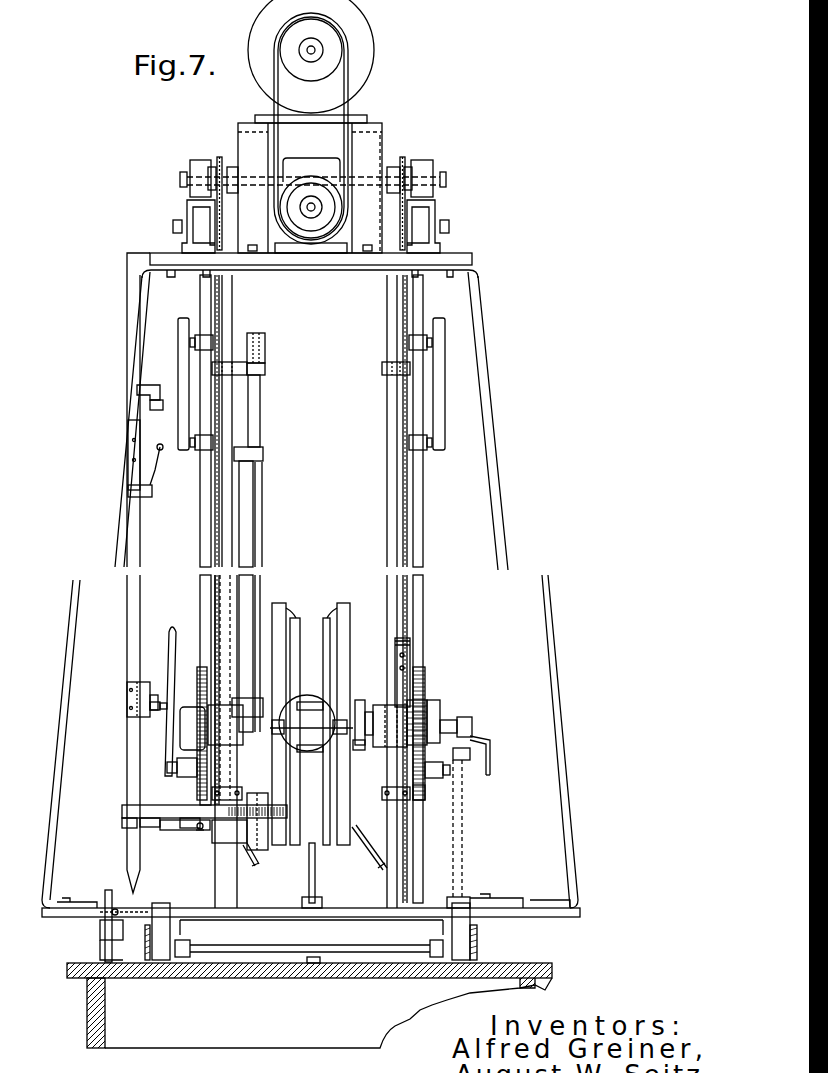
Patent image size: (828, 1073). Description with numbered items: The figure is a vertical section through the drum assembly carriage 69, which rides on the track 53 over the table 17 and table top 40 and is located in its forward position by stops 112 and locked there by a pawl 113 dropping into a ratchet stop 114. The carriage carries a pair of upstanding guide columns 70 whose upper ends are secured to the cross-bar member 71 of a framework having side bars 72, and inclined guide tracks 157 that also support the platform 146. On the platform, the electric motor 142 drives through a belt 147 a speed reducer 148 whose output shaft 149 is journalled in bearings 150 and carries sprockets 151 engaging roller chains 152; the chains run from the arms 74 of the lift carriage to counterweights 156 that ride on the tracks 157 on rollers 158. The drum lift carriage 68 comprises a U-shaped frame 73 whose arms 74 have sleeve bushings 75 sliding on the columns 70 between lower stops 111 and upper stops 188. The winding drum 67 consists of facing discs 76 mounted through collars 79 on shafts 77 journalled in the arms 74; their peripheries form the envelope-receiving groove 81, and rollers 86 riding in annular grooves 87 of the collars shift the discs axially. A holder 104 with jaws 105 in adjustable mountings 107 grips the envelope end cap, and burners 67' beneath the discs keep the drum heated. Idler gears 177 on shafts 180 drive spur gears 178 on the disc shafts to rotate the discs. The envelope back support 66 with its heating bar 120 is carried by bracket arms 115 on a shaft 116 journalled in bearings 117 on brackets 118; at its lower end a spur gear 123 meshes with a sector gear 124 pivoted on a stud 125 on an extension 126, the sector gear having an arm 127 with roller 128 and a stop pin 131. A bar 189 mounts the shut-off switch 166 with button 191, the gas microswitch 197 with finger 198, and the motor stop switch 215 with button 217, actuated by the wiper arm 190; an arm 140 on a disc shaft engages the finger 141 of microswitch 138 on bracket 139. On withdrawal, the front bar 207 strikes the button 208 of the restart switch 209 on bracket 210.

The electric motor 142 is at (366, 63).
The belt 147 is at (267, 107).
The speed reducer 148 is at (311, 160).
The output shaft 149 is at (382, 150).
The bearings 150 is at (427, 165).
The sprockets 151 is at (405, 163).
The roller chains 152 is at (410, 652).
The platform 146 is at (432, 250).
The cross-bar member 71 is at (333, 267).
The side bars 72 is at (560, 712).
The guide columns 70 is at (397, 855).
The guide tracks 157 is at (423, 486).
The rollers 158 is at (420, 450).
The counterweights 156 is at (445, 380).
The bearings 117 is at (262, 850).
The brackets 118 is at (268, 832).
The upper stops 188 is at (382, 368).
The shaft 116 is at (262, 480).
The bracket arms 115 is at (258, 698).
The envelope back support 66 is at (253, 508).
The bar 120 is at (222, 603).
The bar 189 is at (127, 605).
The wiper arm 190 is at (171, 628).
The spur gears 178 is at (425, 675).
The sleeve bushings 75 is at (385, 770).
The holder 104 is at (330, 703).
The jaws 105 is at (333, 730).
The adjustable mountings 107 is at (283, 740).
The discs 76 is at (343, 603).
The annular groove 81 is at (298, 620).
The winding drum 67 is at (309, 589).
The motor stop switch 215 is at (150, 715).
The control button 217 is at (153, 722).
The shafts 180 is at (445, 775).
The vertical stud 125 is at (167, 789).
The spur gear 123 is at (287, 811).
The stops 111 is at (395, 800).
The roller 128 is at (122, 822).
The arm 127 is at (147, 818).
The angular extension 126 is at (170, 830).
The sector gear 124 is at (185, 815).
The stop pin 131 is at (200, 832).
The pawl 113 is at (309, 883).
The drum assembly carriage 69 is at (333, 908).
The burners 67' is at (314, 857).
The front bar 207 is at (100, 900).
The control button 208 is at (100, 915).
The motor restart microswitch 209 is at (100, 937).
The bracket 210 is at (112, 950).
The track 53 is at (477, 942).
The stops 112 is at (452, 928).
The ratchet stop 114 is at (300, 946).
The table top 40 is at (537, 963).
The table 17 is at (87, 1020).
The arms 74 is at (388, 740).
The U-shaped frame 73 is at (417, 700).
The drum lift carriage 68 is at (445, 700).
The shafts 77 is at (452, 720).
The rollers 86 is at (360, 700).
The hubs or collars 79 is at (370, 712).
The annular grooves 87 is at (358, 750).
The arm 140 is at (492, 753).
The control finger 141 is at (490, 765).
The microswitch 138 is at (465, 760).
The bracket 139 is at (462, 837).
The idler gears 177 is at (420, 792).
The control button 191 is at (163, 400).
The switch 166 is at (128, 432).
The switch control finger 198 is at (163, 455).
The microswitch 197 is at (130, 495).